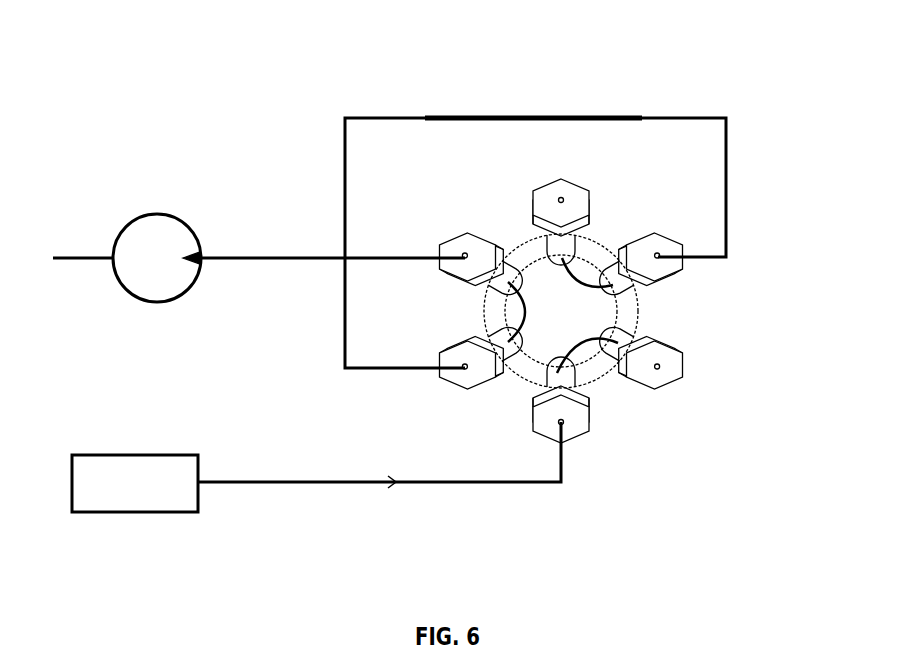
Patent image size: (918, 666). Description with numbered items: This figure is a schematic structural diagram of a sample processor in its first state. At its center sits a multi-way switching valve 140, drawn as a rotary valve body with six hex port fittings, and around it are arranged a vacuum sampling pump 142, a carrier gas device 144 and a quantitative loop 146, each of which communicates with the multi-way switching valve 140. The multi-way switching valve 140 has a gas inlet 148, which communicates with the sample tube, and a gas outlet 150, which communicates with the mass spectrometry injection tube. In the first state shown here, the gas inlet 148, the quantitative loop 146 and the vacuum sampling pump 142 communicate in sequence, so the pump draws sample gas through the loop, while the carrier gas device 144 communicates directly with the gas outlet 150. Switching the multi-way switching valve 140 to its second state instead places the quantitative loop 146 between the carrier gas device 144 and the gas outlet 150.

The multi-way switching valve 140 is at (654, 289).
The vacuum sampling pump 142 is at (155, 275).
The carrier gas device 144 is at (148, 490).
The quantitative loop 146 is at (577, 115).
The gas inlet 148 is at (570, 200).
The gas outlet 150 is at (673, 373).